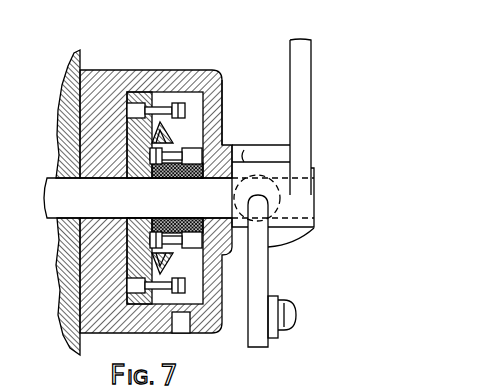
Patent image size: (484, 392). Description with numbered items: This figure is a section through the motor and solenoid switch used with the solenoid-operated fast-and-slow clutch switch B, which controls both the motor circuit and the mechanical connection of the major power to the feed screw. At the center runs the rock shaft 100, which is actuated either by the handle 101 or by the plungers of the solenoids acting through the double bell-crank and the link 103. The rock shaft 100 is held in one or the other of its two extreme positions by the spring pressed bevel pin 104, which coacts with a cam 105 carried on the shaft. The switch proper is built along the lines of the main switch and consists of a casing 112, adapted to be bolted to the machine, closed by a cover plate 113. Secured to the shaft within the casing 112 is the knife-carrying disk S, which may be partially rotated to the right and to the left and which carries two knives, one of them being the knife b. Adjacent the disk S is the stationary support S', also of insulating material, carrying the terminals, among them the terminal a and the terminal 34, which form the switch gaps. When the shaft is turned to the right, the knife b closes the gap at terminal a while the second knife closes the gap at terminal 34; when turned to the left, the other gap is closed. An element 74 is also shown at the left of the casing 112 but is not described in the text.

The flange 74 is at (60, 78).
The casing 112 is at (108, 70).
The cover plate 113 is at (223, 112).
The handle 101 is at (296, 50).
The spring pressed bevel pin 104 is at (268, 145).
The cam 105 is at (267, 272).
The link 103 is at (292, 312).
The rock shaft 100 is at (48, 180).
The stationary support S' is at (165, 112).
The knife-carrying disk S is at (165, 233).
The terminal a is at (177, 104).
The knife b is at (177, 140).
The clutch switch B is at (176, 264).
The terminal 34 is at (183, 295).